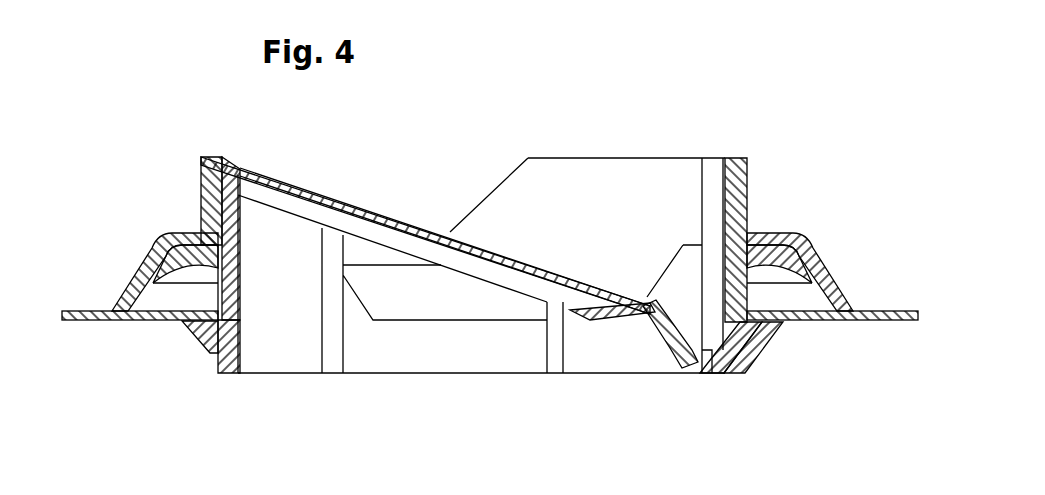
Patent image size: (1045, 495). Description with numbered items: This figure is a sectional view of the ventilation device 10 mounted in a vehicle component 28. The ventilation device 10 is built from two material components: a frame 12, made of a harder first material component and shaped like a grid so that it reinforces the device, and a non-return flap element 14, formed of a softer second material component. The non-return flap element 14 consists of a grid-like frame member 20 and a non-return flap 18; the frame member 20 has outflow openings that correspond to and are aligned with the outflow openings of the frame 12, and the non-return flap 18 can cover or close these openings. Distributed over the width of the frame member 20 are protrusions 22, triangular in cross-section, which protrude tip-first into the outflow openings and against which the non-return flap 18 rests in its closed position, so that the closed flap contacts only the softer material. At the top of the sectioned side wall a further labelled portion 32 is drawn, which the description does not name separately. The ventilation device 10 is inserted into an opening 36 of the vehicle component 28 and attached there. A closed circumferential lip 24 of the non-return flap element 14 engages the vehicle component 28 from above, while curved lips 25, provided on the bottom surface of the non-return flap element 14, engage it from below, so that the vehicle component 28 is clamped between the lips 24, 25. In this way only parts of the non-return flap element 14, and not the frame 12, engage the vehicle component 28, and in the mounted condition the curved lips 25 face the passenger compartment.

The ventilation device 10 is at (150, 172).
The frame 12 is at (655, 168).
The non-return flap element 14 is at (679, 385).
The non-return flap 18 is at (347, 197).
The frame member 20 is at (236, 297).
The protrusions 22 is at (600, 355).
The circumferential lip 24 is at (132, 283).
The curved lips 25 is at (188, 338).
The vehicle component 28 is at (113, 322).
The upper wall rim 32 is at (214, 157).
The opening 36 is at (225, 353).